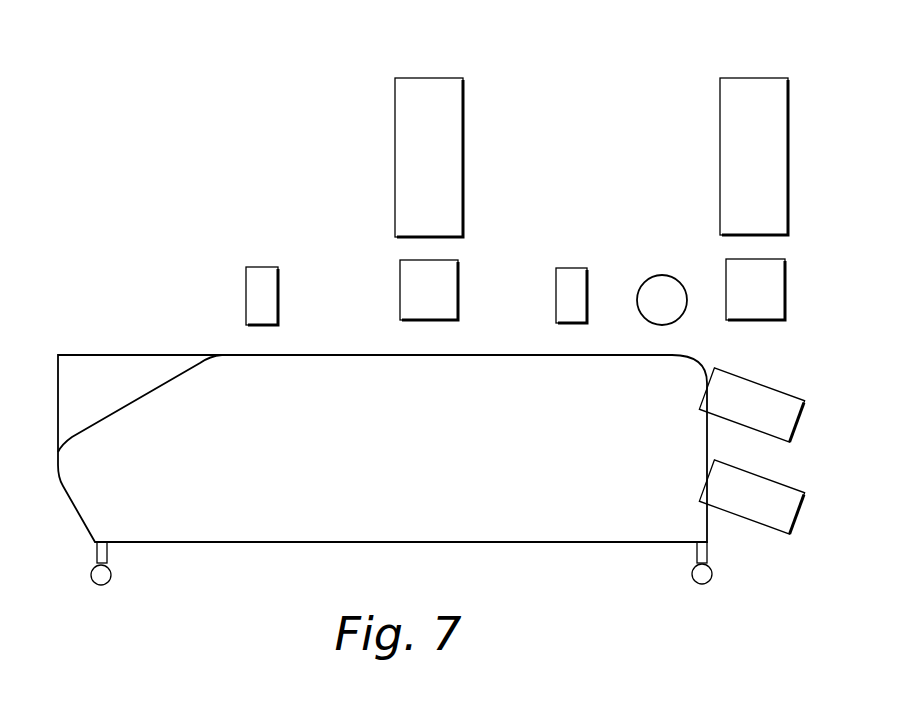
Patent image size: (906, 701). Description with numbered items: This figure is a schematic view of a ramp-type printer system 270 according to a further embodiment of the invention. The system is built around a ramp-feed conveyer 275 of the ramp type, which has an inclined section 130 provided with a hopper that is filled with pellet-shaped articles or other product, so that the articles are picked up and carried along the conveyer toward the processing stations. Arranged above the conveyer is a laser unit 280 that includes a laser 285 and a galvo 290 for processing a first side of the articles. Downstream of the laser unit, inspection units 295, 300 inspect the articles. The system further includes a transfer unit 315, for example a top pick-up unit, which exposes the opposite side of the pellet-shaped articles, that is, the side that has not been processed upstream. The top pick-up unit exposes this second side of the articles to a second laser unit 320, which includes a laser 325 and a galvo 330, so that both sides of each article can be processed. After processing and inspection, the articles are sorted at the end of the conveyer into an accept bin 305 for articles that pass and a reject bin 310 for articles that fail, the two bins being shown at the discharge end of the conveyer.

The control system 270 is at (138, 117).
The ramp-feed conveyer 275 is at (142, 295).
The inclined section 130 is at (120, 410).
The laser unit 280 is at (472, 292).
The laser 285 is at (407, 169).
The galvo 290 is at (408, 299).
The inspection unit 295 is at (260, 282).
The inspection unit 300 is at (567, 278).
The accept bin 305 is at (733, 417).
The reject bin 310 is at (733, 509).
The transfer unit 315 is at (659, 280).
The second laser unit 320 is at (797, 138).
The laser 325 is at (735, 169).
The controller 330 is at (735, 300).